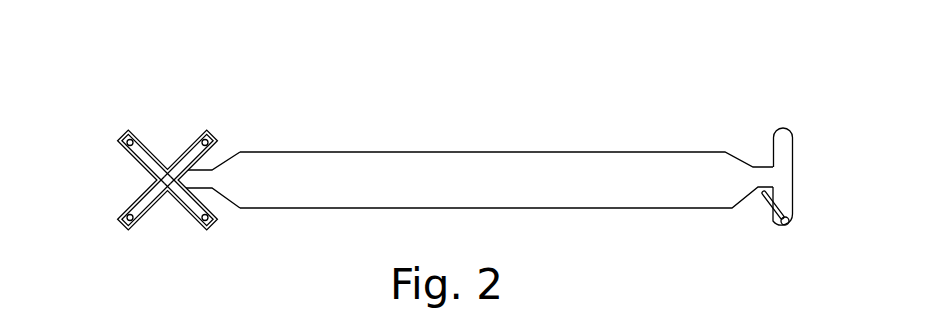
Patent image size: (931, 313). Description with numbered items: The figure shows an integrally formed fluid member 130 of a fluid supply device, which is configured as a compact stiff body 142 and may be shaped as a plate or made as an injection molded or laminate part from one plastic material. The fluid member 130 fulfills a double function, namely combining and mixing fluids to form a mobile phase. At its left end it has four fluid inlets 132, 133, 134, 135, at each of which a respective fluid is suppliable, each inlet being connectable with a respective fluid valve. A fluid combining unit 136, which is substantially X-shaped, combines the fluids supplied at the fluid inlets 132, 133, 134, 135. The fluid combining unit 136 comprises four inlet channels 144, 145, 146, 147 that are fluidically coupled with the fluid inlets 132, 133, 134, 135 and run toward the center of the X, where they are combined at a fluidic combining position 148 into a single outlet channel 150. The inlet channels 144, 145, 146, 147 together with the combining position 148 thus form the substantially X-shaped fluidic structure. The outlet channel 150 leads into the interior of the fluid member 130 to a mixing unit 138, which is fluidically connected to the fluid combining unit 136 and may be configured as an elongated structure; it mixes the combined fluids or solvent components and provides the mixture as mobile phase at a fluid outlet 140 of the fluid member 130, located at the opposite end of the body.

The integrally formed fluid member 130 is at (117, 74).
The fluid inlet 132 is at (128, 137).
The fluid inlet 133 is at (210, 148).
The fluid inlet 134 is at (207, 222).
The fluid inlet 135 is at (128, 222).
The fluid combining unit 136 is at (123, 159).
The mixing unit 138 is at (484, 175).
The fluid outlet 140 is at (765, 197).
The stiff body 142 is at (213, 153).
The inlet channel 144 is at (163, 165).
The inlet channel 145 is at (190, 143).
The inlet channel 146 is at (187, 208).
The inlet channel 147 is at (150, 207).
The fluidic combining position 148 is at (155, 182).
The outlet channel 150 is at (213, 207).